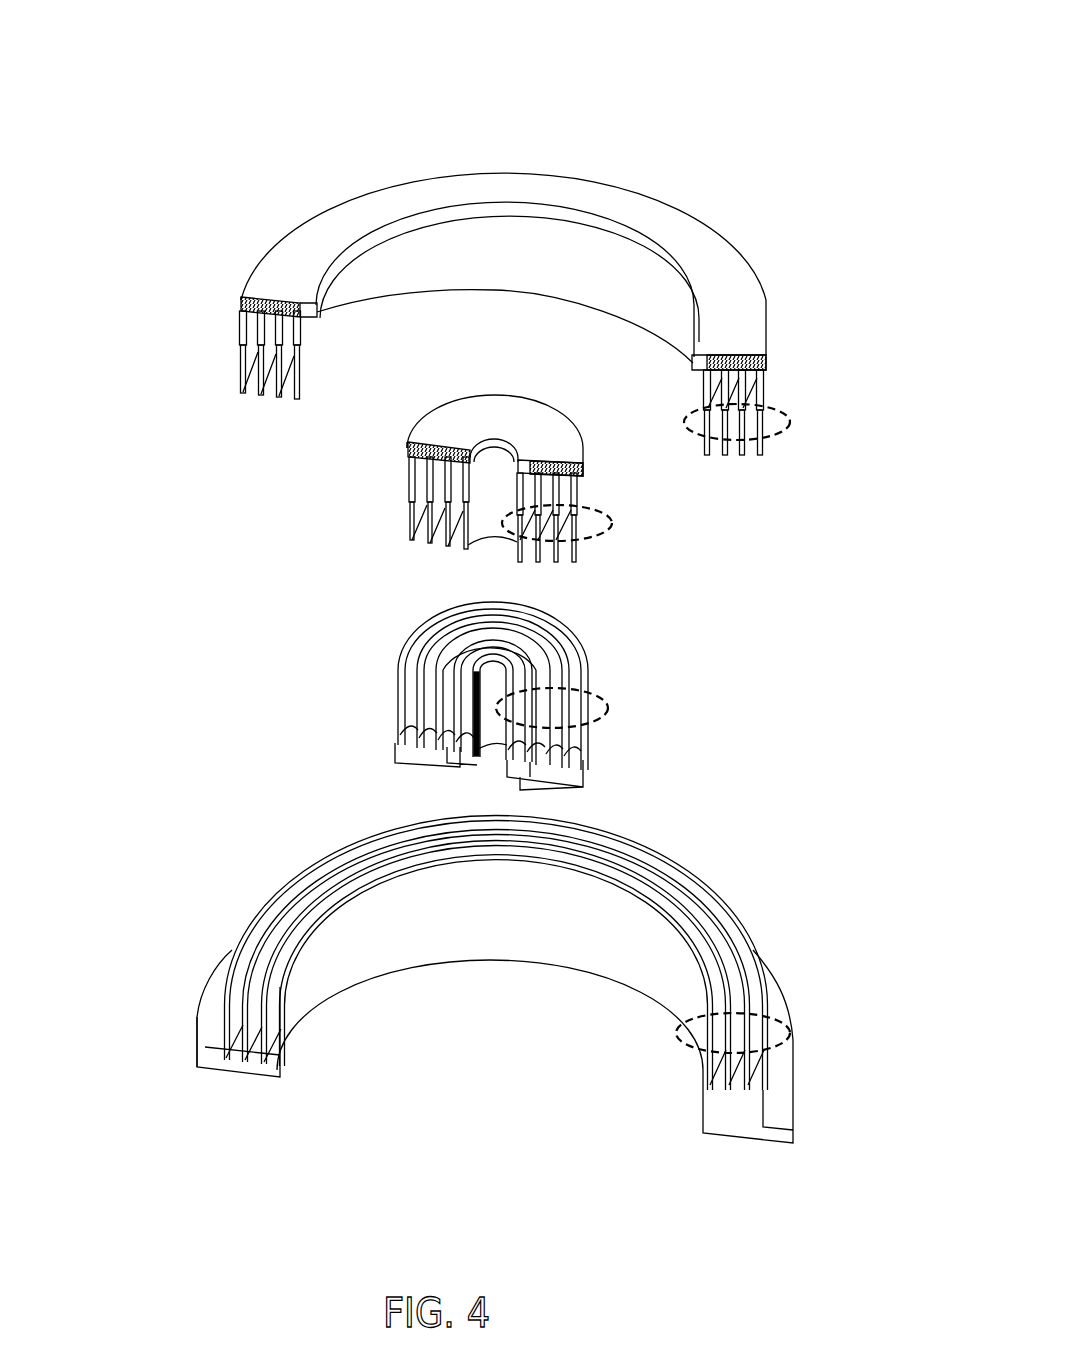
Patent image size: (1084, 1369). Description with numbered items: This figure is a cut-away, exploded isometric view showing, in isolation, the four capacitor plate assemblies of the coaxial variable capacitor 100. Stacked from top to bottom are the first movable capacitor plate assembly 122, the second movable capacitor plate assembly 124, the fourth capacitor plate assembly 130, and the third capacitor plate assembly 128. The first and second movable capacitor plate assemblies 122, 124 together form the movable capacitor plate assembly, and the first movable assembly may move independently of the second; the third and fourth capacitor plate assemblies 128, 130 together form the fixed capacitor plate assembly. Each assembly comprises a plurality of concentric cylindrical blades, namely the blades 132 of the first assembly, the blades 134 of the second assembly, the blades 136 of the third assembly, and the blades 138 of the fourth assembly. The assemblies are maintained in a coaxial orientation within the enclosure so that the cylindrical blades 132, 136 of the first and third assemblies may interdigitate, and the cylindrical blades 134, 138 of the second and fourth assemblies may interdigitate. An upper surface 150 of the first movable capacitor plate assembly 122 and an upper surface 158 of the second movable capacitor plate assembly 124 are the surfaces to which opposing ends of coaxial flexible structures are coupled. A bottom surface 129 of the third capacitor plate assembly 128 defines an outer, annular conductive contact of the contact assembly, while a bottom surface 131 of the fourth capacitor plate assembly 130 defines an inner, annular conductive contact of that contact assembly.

The coaxial variable capacitor 100 is at (732, 70).
The first movable capacitor plate assembly 122 is at (188, 316).
The second movable capacitor plate assembly 124 is at (380, 485).
The third capacitor plate assembly 128 is at (270, 843).
The bottom surface 129 is at (753, 1140).
The fourth capacitor plate assembly 130 is at (360, 696).
The bottom surface 131 is at (560, 785).
The concentric cylindrical blades 132 is at (790, 416).
The concentric cylindrical blades 134 is at (612, 521).
The concentric cylindrical blades 136 is at (788, 1030).
The concentric cylindrical blades 138 is at (606, 704).
The upper surface 150 is at (750, 295).
The upper surface 158 is at (520, 408).